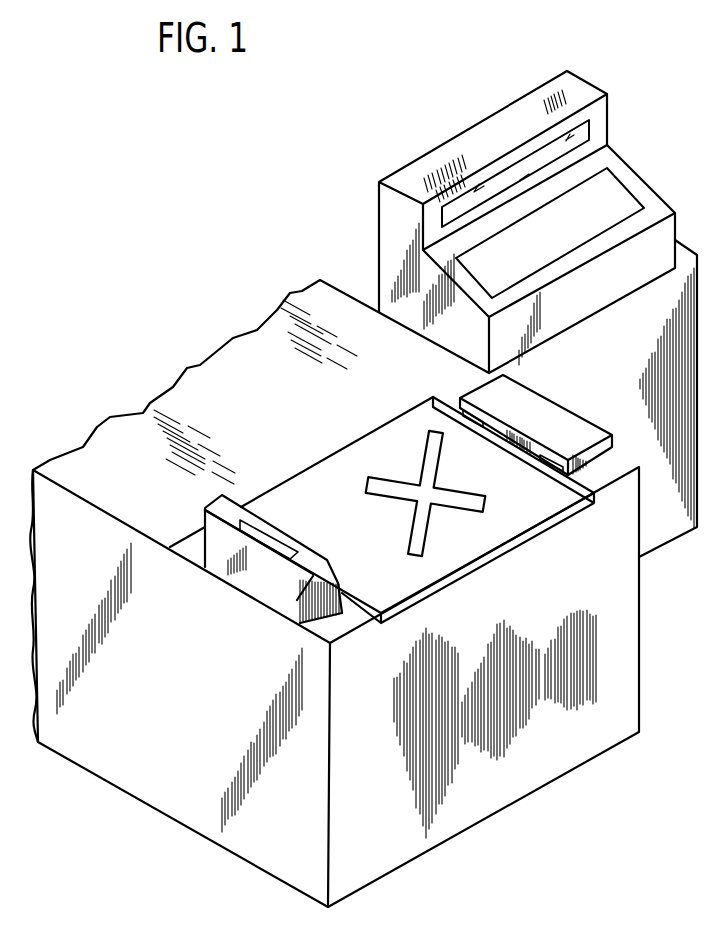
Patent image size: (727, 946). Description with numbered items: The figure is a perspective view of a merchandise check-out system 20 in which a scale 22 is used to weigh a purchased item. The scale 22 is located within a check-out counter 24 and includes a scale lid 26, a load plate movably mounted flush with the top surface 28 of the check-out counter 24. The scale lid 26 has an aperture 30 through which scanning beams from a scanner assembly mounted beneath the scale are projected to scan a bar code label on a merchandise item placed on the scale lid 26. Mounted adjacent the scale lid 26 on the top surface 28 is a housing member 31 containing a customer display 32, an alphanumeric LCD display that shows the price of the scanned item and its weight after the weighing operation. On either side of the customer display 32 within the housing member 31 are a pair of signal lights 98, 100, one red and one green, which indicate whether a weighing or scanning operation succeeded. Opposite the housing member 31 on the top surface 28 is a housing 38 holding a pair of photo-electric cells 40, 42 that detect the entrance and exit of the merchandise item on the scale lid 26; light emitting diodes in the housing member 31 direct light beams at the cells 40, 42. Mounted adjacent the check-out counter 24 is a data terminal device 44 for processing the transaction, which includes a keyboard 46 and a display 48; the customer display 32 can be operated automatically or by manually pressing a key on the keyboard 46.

The merchandise check-out system 20 is at (342, 272).
The scale 22 is at (326, 447).
The check-out counter 24 is at (519, 778).
The scale lid 26 is at (404, 580).
The top surface 28 is at (185, 392).
The aperture 30 is at (421, 527).
The housing member 31 is at (255, 573).
The customer display 32 is at (246, 533).
The housing 38 is at (547, 418).
The photo-electric cell 40 is at (488, 405).
The photo-electric cell 42 is at (555, 460).
The data terminal device 44 is at (486, 120).
The keyboard 46 is at (633, 198).
The display 48 is at (592, 134).
The signal light 98 is at (205, 507).
The signal light 100 is at (303, 570).